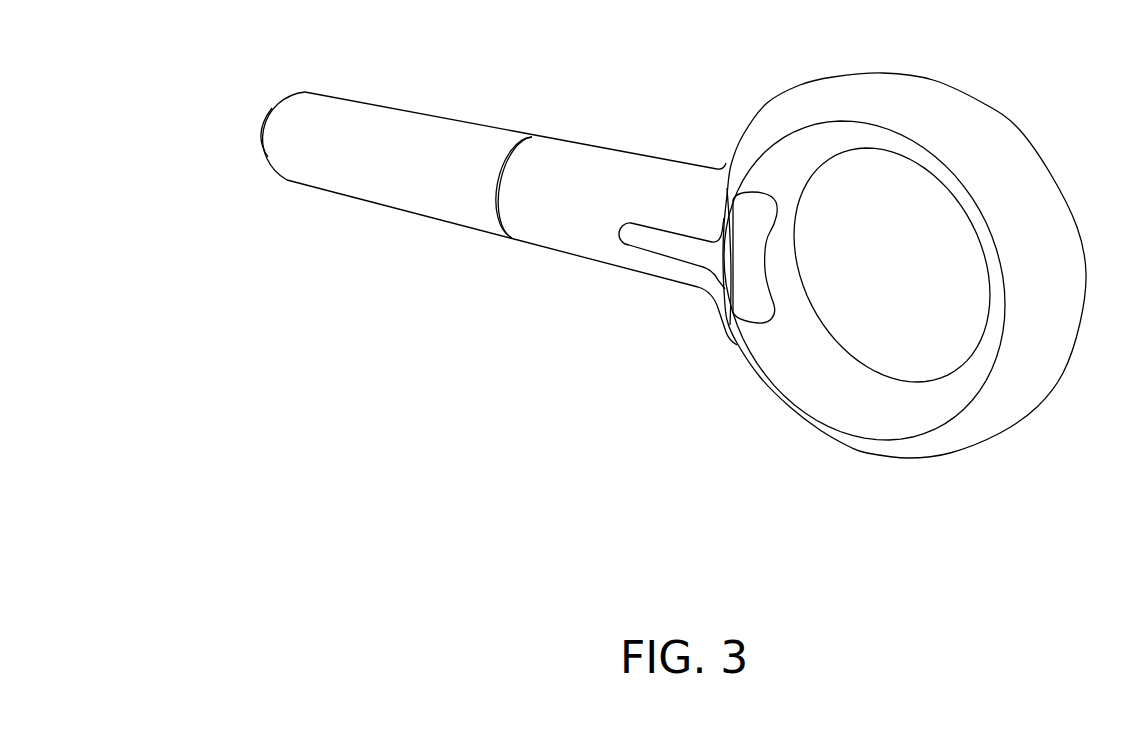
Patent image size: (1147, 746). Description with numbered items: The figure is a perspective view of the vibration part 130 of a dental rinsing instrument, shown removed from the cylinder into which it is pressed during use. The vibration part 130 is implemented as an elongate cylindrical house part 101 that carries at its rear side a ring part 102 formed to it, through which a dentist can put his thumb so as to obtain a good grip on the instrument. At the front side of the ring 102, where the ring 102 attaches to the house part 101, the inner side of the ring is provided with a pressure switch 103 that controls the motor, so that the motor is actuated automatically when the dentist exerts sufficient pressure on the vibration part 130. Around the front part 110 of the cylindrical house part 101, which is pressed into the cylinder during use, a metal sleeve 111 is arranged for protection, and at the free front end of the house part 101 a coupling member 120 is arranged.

The cylindrical house part 101 is at (643, 183).
The ring part 102 is at (1006, 152).
The pressure switch 103 is at (745, 262).
The front part 110 is at (372, 243).
The metal sleeve 111 is at (429, 152).
The coupling member 120 is at (247, 160).
The vibration part 130 is at (528, 425).